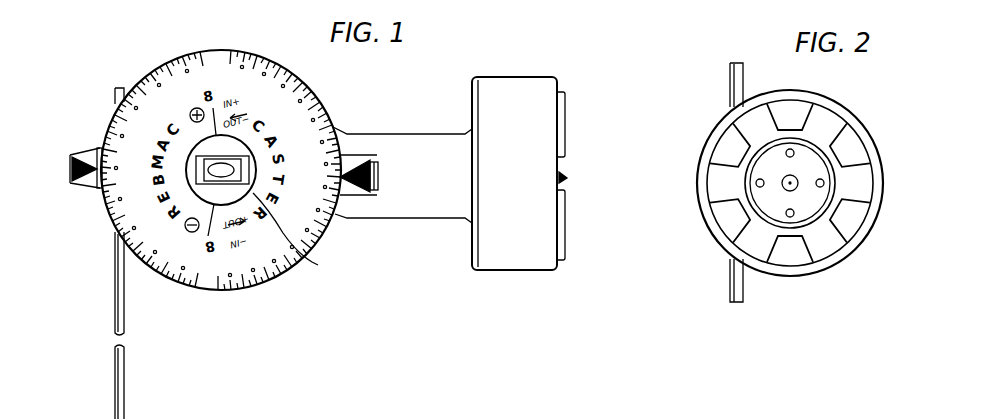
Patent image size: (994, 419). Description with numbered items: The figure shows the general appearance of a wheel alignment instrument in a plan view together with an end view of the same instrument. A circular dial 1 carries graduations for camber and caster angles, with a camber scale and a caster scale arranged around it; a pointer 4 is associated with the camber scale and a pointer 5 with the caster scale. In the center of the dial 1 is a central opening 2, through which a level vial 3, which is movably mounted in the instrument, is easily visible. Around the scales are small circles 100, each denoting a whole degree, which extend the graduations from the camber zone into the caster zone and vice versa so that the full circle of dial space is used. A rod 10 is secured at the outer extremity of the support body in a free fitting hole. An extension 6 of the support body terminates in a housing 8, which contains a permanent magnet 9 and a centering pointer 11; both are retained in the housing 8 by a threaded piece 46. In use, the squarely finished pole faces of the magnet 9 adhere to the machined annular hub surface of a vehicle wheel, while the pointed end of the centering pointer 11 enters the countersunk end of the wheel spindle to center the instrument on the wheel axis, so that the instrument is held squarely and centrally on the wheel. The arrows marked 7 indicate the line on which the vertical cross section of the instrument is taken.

In FIG. 1, the circular dial 1 is at (243, 290).
In FIG. 2, the circular dial 1 is at (727, 277).
In FIG. 1, the central opening 2 is at (308, 260).
In FIG. 1, the level vial 3 is at (232, 155).
In FIG. 1, the pointer 4 is at (80, 193).
In FIG. 1, the pointer 5 is at (362, 194).
In FIG. 1, the extension 6 is at (420, 134).
In FIG. 1, the section line 7 is at (60, 170).
In FIG. 1, the housing 8 is at (530, 270).
In FIG. 1, the magnet 9 is at (565, 241).
In FIG. 2, the magnet 9 is at (797, 260).
In FIG. 1, the rod 10 is at (124, 312).
In FIG. 1, the centering pointer 11 is at (565, 178).
In FIG. 2, the centering pointer 11 is at (795, 187).
In FIG. 2, the threaded piece 46 is at (765, 157).
In FIG. 1, the small circles 100 is at (158, 66).